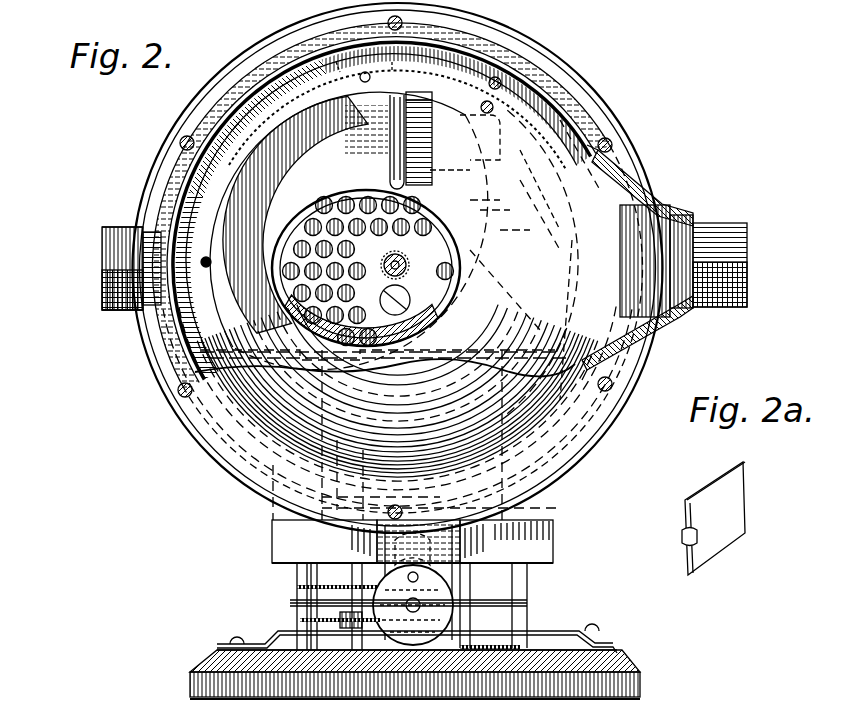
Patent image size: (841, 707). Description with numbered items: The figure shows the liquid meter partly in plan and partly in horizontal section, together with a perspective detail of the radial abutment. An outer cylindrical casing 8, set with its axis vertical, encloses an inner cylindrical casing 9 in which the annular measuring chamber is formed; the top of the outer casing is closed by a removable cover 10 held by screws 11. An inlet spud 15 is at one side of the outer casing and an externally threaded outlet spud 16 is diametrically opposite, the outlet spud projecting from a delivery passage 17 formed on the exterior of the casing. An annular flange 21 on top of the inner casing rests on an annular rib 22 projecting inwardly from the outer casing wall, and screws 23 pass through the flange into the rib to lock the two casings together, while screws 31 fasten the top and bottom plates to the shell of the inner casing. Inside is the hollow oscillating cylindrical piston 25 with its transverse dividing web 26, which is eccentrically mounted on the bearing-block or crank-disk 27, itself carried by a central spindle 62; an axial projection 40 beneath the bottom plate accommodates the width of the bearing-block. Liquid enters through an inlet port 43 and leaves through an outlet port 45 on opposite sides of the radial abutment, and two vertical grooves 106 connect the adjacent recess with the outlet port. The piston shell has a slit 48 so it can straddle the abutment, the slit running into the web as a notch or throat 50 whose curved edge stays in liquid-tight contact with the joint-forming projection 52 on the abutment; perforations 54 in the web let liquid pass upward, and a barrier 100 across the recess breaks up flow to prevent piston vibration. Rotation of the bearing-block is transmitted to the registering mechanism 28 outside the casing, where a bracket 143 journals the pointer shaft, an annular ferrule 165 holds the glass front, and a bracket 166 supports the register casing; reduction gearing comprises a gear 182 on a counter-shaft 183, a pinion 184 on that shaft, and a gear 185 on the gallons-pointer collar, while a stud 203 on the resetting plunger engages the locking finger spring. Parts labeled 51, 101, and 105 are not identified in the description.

In FIG. 2, the outer cylindrical casing 8 is at (150, 367).
In FIG. 2, the inner cylindrical casing 9 is at (227, 200).
In FIG. 2, the removable cover 10 is at (250, 412).
In FIG. 2, the screws 11 is at (182, 143).
In FIG. 2, the inlet spud 15 is at (95, 270).
In FIG. 2, the outlet spud 16 is at (750, 262).
In FIG. 2A, the outlet spud 16 is at (722, 532).
In FIG. 2, the delivery passage 17 is at (648, 202).
In FIG. 2, the annular flange 21 is at (605, 210).
In FIG. 2, the annular rib 22 is at (195, 173).
In FIG. 2, the screws 23 is at (292, 72).
In FIG. 2, the oscillating cylindrical piston 25 is at (518, 232).
In FIG. 2, the transverse dividing web 26 is at (290, 267).
In FIG. 2, the bearing-block or crank-disk 27 is at (506, 194).
In FIG. 2, the registering mechanism 28 is at (220, 622).
In FIG. 2, the screws 31 is at (248, 78).
In FIG. 2, the axial projection 40 is at (405, 95).
In FIG. 2, the inlet port 43 is at (343, 59).
In FIG. 2, the outlet port 45 is at (432, 125).
In FIG. 2, the slit 48 is at (385, 59).
In FIG. 2, the notch or throat 50 is at (435, 175).
In FIG. 2, the pinion 51 is at (447, 283).
In FIG. 2, the joint-forming projection 52 is at (460, 158).
In FIG. 2A, the joint-forming projection 52 is at (682, 540).
In FIG. 2, the perforations 54 is at (280, 352).
In FIG. 2, the central spindle 62 is at (420, 305).
In FIG. 2, the barrier 100 is at (220, 108).
In FIG. 2, the fastening screws 101 is at (442, 108).
In FIG. 2, the lever 105 is at (440, 217).
In FIG. 2, the vertical grooves 106 is at (420, 120).
In FIG. 2, the bracket 143 is at (452, 552).
In FIG. 2, the annular ferrule 165 is at (190, 683).
In FIG. 2, the bracket 166 is at (450, 648).
In FIG. 2, the gear 182 is at (297, 590).
In FIG. 2, the counter-shaft 183 is at (327, 596).
In FIG. 2, the pinion 184 is at (317, 620).
In FIG. 2, the gear 185 is at (380, 620).
In FIG. 2, the stud 203 is at (442, 580).